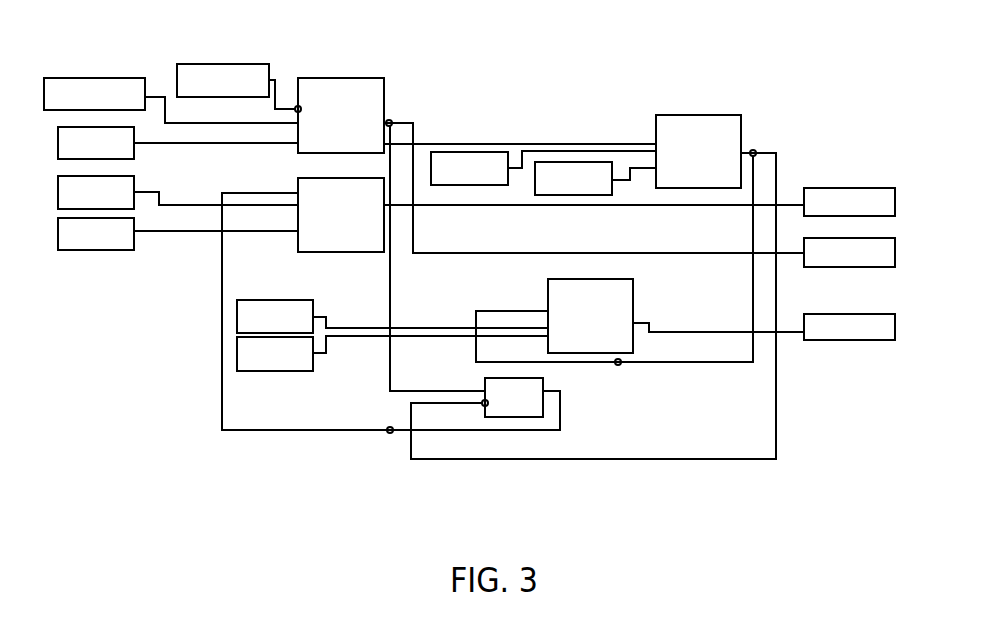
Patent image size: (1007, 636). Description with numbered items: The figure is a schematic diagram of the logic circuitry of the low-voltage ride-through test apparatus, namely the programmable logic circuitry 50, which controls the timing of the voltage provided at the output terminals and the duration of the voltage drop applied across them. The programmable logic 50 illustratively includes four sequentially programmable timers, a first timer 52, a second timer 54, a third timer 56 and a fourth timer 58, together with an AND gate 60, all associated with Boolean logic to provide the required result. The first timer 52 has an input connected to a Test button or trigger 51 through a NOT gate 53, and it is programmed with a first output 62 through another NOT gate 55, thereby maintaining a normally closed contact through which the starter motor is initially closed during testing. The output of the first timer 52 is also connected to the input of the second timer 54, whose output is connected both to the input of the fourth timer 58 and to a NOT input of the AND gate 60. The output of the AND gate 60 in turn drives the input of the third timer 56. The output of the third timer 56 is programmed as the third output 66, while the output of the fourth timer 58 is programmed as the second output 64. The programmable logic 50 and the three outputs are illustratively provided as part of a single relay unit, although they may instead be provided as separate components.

The programmable logic circuitry 50 is at (707, 563).
The trigger 51 is at (185, 64).
The first timer 52 is at (375, 77).
The NOT gate 53 is at (296, 107).
The second timer 54 is at (665, 113).
The NOT gate 55 is at (484, 406).
The third timer 56 is at (308, 253).
The fourth timer 58 is at (636, 296).
The AND gate 60 is at (545, 403).
The OUTPUT-1 62 is at (895, 250).
The OUTPUT-2 64 is at (895, 322).
The OUTPUT-3 66 is at (895, 198).